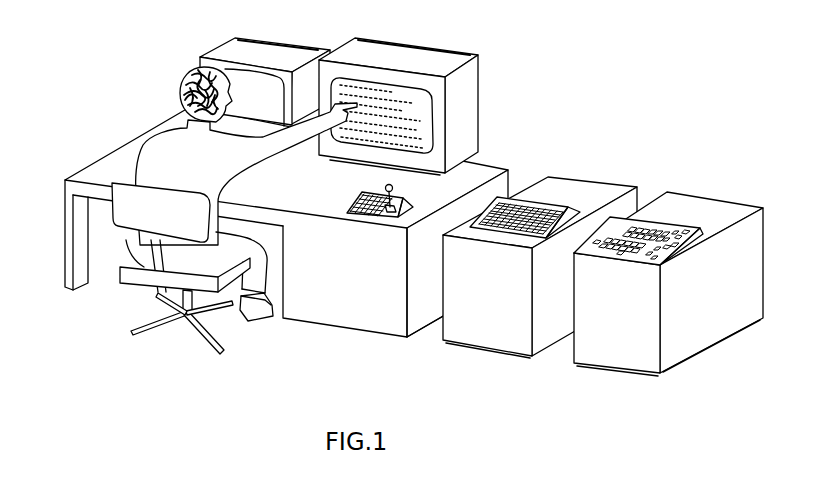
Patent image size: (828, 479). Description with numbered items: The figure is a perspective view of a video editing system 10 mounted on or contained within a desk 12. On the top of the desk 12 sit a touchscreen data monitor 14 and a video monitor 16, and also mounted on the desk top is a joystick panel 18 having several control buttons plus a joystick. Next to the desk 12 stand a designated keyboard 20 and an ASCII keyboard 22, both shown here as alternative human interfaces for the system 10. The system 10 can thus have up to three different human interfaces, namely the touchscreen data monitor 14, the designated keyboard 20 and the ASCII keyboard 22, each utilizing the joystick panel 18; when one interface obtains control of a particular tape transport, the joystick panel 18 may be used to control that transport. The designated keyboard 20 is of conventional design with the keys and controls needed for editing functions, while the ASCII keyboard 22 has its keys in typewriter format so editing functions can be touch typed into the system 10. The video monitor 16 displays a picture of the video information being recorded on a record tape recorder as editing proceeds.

The video editing system 10 is at (414, 198).
The desk 12 is at (496, 163).
The touchscreen data monitor 14 is at (413, 53).
The video monitor 16 is at (273, 48).
The joystick panel 18 is at (403, 199).
The designated keyboard 20 is at (536, 206).
The ASCII keyboard 22 is at (672, 221).